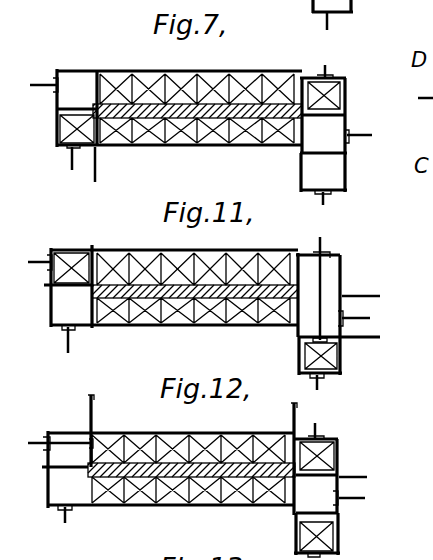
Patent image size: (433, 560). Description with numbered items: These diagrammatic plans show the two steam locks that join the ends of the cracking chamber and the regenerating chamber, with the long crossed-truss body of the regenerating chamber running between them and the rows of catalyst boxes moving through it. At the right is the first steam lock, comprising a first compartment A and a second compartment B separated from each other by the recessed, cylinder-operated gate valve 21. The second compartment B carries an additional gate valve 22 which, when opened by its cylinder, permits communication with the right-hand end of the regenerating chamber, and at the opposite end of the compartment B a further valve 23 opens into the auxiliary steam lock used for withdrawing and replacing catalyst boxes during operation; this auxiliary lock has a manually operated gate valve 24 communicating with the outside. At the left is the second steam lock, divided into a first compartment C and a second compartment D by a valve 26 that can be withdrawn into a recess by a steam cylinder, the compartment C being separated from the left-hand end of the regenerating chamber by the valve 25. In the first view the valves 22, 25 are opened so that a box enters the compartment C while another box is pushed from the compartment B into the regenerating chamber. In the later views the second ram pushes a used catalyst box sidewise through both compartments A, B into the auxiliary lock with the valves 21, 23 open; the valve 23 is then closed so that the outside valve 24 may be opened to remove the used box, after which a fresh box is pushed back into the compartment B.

In FIG. 7, the first compartment of the first steam lock A is at (340, 90).
In FIG. 11, the first compartment of the first steam lock A is at (338, 273).
In FIG. 12, the first compartment of the first steam lock A is at (338, 453).
In FIG. 7, the second compartment of the first steam lock B is at (331, 146).
In FIG. 11, the second compartment of the first steam lock B is at (327, 315).
In FIG. 12, the second compartment of the first steam lock B is at (320, 492).
In FIG. 7, the first compartment of the second steam lock C is at (57, 136).
In FIG. 11, the first compartment of the second steam lock C is at (50, 313).
In FIG. 12, the first compartment of the second steam lock C is at (55, 487).
In FIG. 7, the second compartment of the second steam lock D is at (70, 78).
In FIG. 11, the second compartment of the second steam lock D is at (53, 253).
In FIG. 12, the second compartment of the second steam lock D is at (60, 435).
In FIG. 11, the gate valve 21 is at (363, 293).
In FIG. 12, the gate valve 21 is at (367, 473).
In FIG. 7, the gate valve 22 is at (300, 170).
In FIG. 11, the gate valve 22 is at (298, 337).
In FIG. 11, the valve 23 is at (367, 342).
In FIG. 12, the valve 23 is at (338, 513).
In FIG. 11, the manually operated gate valve 24 is at (333, 378).
In FIG. 7, the valve 25 is at (100, 170).
In FIG. 7, the valve 26 is at (432, 131).